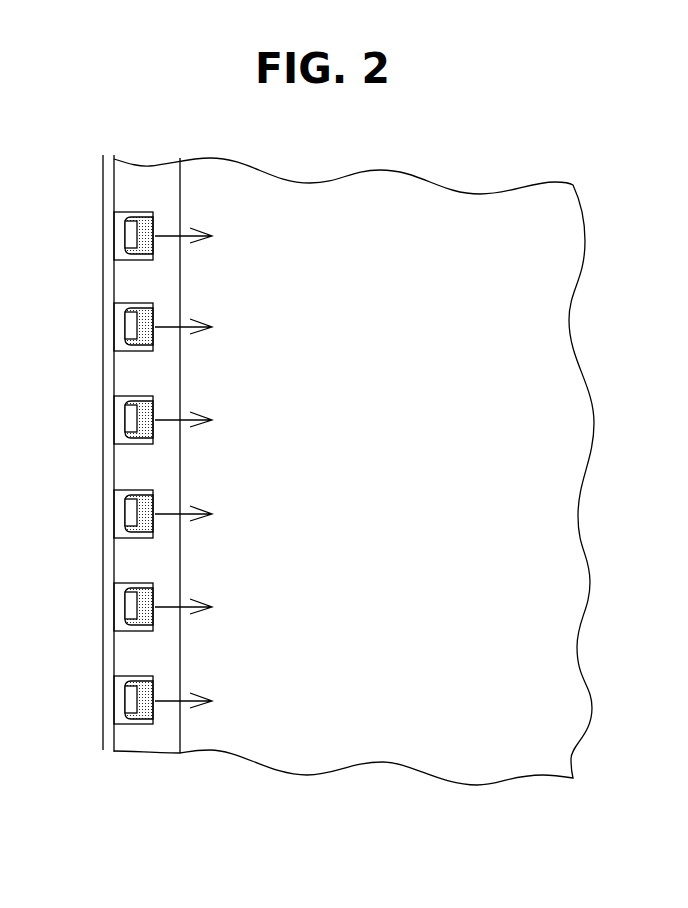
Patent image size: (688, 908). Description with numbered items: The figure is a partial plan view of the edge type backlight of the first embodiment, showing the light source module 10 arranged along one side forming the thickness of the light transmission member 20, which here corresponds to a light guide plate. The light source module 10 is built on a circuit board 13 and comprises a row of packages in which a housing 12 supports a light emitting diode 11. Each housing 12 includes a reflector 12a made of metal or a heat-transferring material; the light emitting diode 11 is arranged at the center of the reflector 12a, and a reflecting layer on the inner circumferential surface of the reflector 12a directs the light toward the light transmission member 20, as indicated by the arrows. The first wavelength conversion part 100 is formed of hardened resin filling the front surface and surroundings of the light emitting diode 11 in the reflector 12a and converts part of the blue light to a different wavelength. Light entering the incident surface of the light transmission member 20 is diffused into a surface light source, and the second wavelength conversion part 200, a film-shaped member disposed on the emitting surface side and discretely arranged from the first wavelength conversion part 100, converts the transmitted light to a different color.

The light source module 10 is at (126, 511).
The light emitting diode 11 is at (136, 709).
The housing 12 is at (133, 468).
The reflector 12a is at (141, 720).
The circuit board 13 is at (108, 453).
The first wavelength conversion part 100 is at (126, 517).
The light transmission member 20 is at (354, 502).
The second wavelength conversion part 200 is at (363, 733).